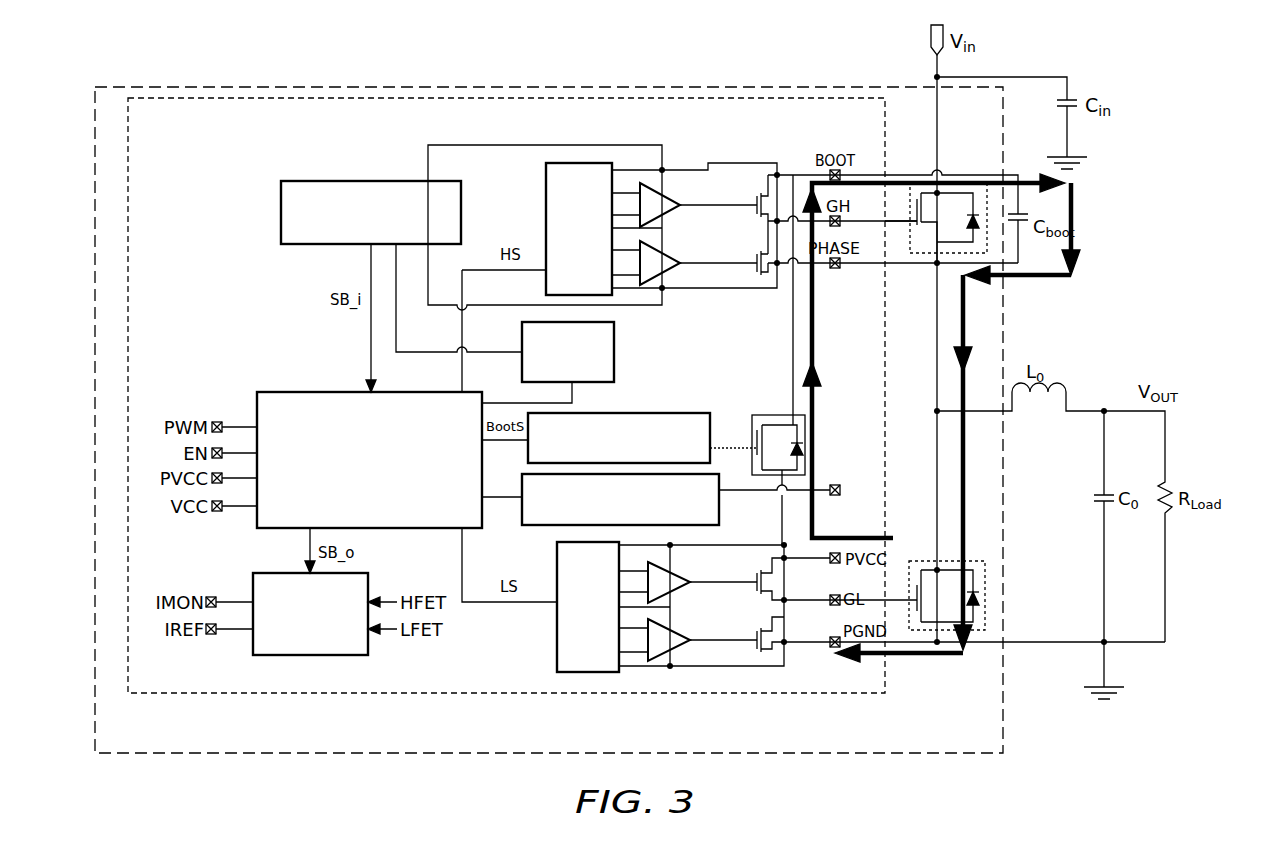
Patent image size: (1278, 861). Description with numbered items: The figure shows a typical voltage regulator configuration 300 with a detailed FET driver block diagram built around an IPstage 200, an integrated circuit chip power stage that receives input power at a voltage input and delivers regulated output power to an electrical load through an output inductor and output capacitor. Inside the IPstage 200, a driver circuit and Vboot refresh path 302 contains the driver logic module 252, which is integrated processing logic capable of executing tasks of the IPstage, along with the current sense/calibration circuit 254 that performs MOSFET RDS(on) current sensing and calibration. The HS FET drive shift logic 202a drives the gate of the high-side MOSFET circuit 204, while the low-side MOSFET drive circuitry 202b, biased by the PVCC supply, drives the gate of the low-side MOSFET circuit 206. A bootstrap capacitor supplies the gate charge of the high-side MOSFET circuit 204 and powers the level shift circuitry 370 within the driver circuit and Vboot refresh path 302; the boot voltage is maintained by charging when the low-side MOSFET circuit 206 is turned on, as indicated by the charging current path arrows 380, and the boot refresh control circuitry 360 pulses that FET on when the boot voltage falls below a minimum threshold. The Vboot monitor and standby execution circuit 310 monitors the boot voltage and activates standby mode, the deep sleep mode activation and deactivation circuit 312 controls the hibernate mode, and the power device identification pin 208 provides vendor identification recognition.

The VR configuration 300 is at (1150, 60).
The IPstage 200 is at (95, 268).
The driver circuit and Vboot refresh path 302 is at (128, 205).
The Vboot monitor and standby execution circuit 310 is at (281, 214).
The driver logic module 252 is at (300, 392).
The current sense/calibration circuit 254 is at (302, 655).
The HS FET drive shift logic 202a is at (546, 178).
The low-side MOSFET drive circuitry 202b is at (557, 565).
The boot refresh control circuitry 360 is at (614, 361).
The level shift circuitry 370 is at (650, 413).
The deep sleep mode activation and deactivation circuit 312 is at (719, 505).
The power device identification pin 208 is at (828, 486).
The high-side MOSFET circuit 204 is at (925, 178).
The low-side MOSFET circuit 206 is at (925, 561).
The charging current path arrows 380 is at (877, 182).